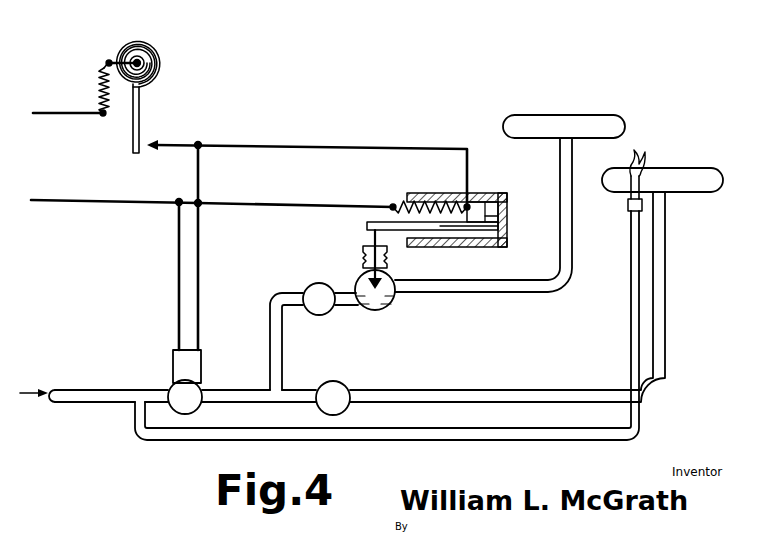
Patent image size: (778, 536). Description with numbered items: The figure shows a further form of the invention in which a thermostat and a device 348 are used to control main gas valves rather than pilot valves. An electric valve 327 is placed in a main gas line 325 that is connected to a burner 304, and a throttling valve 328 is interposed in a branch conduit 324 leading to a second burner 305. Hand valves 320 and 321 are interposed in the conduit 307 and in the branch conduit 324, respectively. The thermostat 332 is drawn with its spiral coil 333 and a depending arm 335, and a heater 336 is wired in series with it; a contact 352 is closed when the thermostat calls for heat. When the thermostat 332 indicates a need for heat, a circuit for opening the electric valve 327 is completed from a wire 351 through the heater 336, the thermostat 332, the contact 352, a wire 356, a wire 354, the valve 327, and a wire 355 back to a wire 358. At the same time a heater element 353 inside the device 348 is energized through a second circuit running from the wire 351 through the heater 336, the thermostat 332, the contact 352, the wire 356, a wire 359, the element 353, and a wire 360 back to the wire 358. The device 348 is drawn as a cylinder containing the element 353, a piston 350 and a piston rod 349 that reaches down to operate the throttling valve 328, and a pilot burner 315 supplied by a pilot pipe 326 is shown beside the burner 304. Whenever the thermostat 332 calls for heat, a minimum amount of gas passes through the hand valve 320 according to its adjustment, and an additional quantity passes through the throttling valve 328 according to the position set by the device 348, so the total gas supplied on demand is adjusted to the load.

The burner 304 is at (679, 168).
The second burner 305 is at (572, 114).
The conduit 307 is at (669, 296).
The pilot burner 315 is at (649, 168).
The hand valve 320 is at (350, 376).
The hand valve 321 is at (321, 316).
The branch conduit 324 is at (450, 294).
The main gas line 325 is at (92, 405).
The pilot pipe 326 is at (492, 430).
The electric valve 327 is at (160, 360).
The throttling valve 328 is at (349, 270).
The thermostat 332 is at (168, 50).
The bimetallic spiral 333 is at (127, 42).
The contact arm 335 is at (141, 112).
The heater 336 is at (99, 84).
The device 348 is at (496, 176).
The piston rod 349 is at (508, 224).
The piston 350 is at (445, 248).
The wire 351 is at (61, 118).
The contact 352 is at (148, 150).
The heater element 353 is at (437, 196).
The wire 354 is at (200, 267).
The wire 355 is at (177, 279).
The wire 356 is at (180, 144).
The wire 358 is at (82, 205).
The wire 359 is at (310, 148).
The wire 360 is at (300, 194).